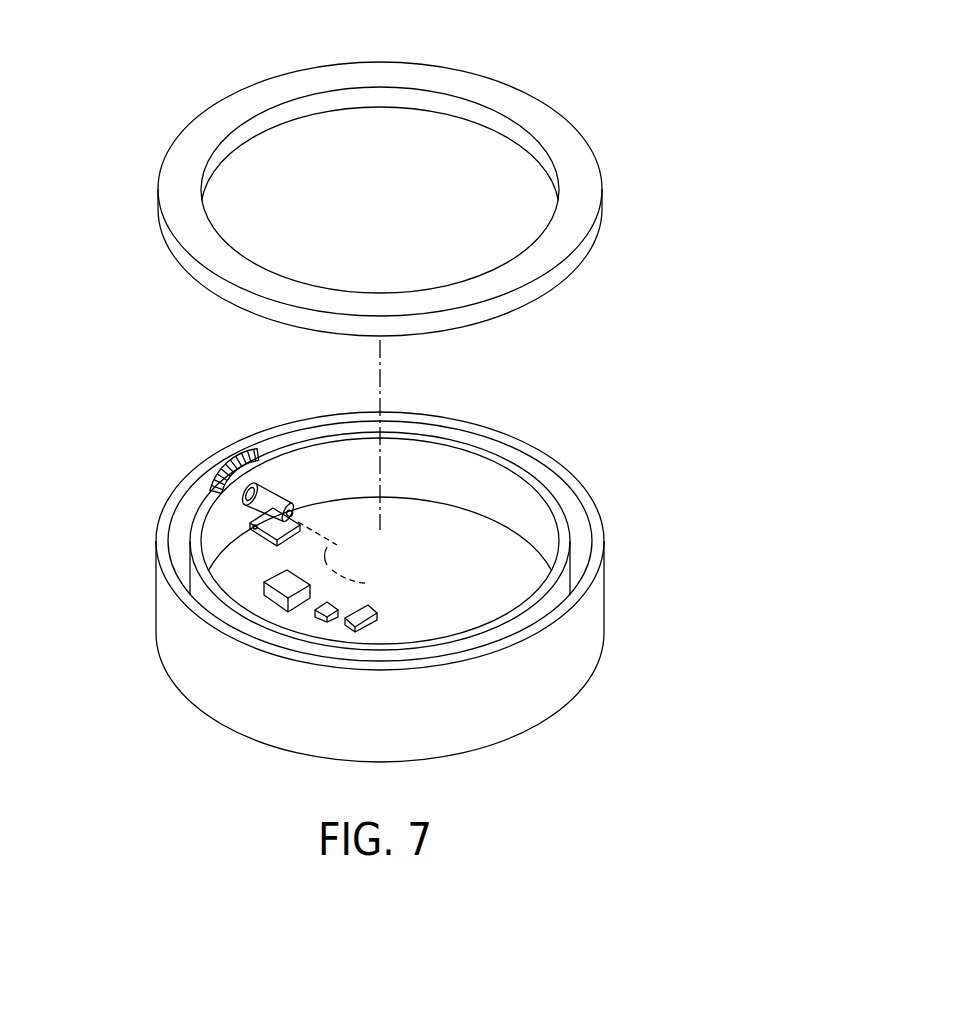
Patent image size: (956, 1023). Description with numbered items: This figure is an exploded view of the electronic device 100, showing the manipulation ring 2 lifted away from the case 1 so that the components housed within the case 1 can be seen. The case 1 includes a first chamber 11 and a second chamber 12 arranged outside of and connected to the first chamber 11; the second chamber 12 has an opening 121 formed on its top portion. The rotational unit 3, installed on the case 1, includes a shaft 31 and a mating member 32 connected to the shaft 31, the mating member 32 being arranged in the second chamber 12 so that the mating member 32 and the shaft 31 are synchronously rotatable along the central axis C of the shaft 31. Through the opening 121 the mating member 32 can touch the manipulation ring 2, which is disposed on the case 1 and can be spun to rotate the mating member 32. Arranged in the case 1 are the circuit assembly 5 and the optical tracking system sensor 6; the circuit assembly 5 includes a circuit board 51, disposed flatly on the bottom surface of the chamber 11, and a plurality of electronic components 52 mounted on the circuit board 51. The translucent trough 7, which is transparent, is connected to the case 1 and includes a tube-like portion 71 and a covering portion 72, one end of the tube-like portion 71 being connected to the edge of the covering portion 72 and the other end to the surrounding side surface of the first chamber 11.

The electronic device 100 is at (548, 30).
The case 1 is at (408, 570).
The first chamber 11 is at (448, 472).
The second chamber 12 is at (577, 552).
The opening 121 is at (530, 456).
The manipulation ring 2 is at (578, 130).
The rotational unit 3 is at (116, 448).
The shaft 31 is at (243, 516).
The mating member 32 is at (212, 457).
The circuit assembly 5 is at (111, 597).
The circuit board 51 is at (238, 583).
The electronic components 52 is at (278, 598).
The optical tracking system sensor 6 is at (250, 545).
The translucent trough 7 is at (345, 384).
The tube-like portion 71 is at (288, 512).
The covering portion 72 is at (297, 509).
The central axis C is at (343, 561).